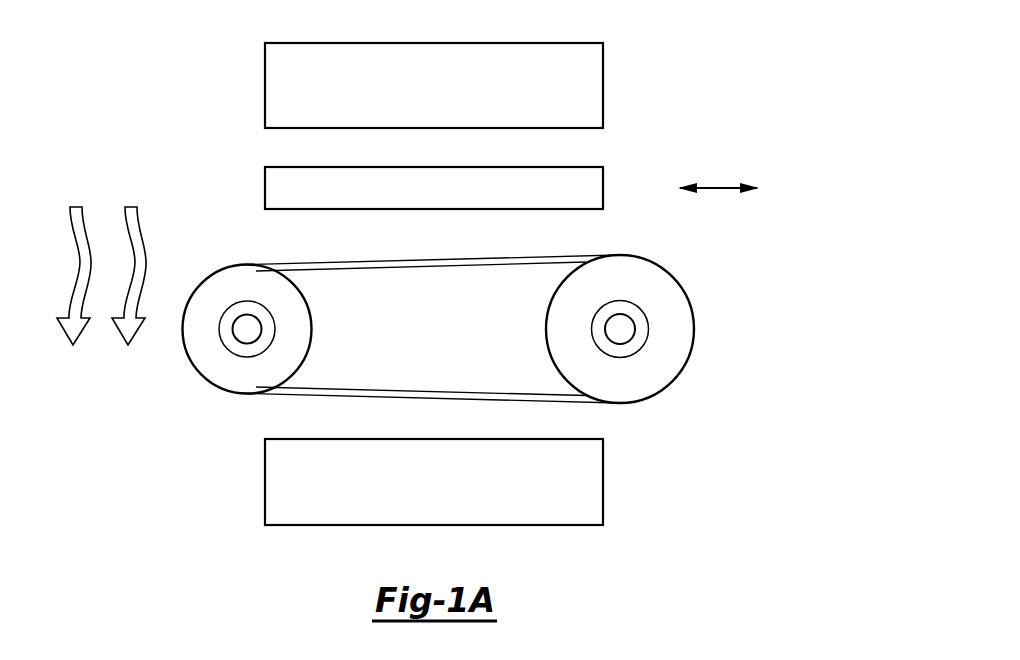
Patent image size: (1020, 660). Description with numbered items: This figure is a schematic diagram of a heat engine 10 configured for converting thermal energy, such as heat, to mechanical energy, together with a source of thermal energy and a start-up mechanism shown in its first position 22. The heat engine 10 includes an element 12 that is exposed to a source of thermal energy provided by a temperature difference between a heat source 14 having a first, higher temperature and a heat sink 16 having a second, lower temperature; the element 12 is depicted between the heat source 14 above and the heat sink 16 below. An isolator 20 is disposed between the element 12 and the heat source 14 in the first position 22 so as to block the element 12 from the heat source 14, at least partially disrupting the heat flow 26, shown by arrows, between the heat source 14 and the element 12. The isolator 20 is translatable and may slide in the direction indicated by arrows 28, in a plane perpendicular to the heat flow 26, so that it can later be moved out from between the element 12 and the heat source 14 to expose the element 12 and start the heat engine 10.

The heat engine 10 is at (201, 259).
The element 12 is at (366, 266).
The heat source 14 is at (603, 83).
The heat sink 16 is at (603, 478).
The isolator 20 is at (603, 190).
The first position 22 is at (236, 167).
The heat flow 26 is at (70, 216).
The direction of sliding 28 is at (722, 187).